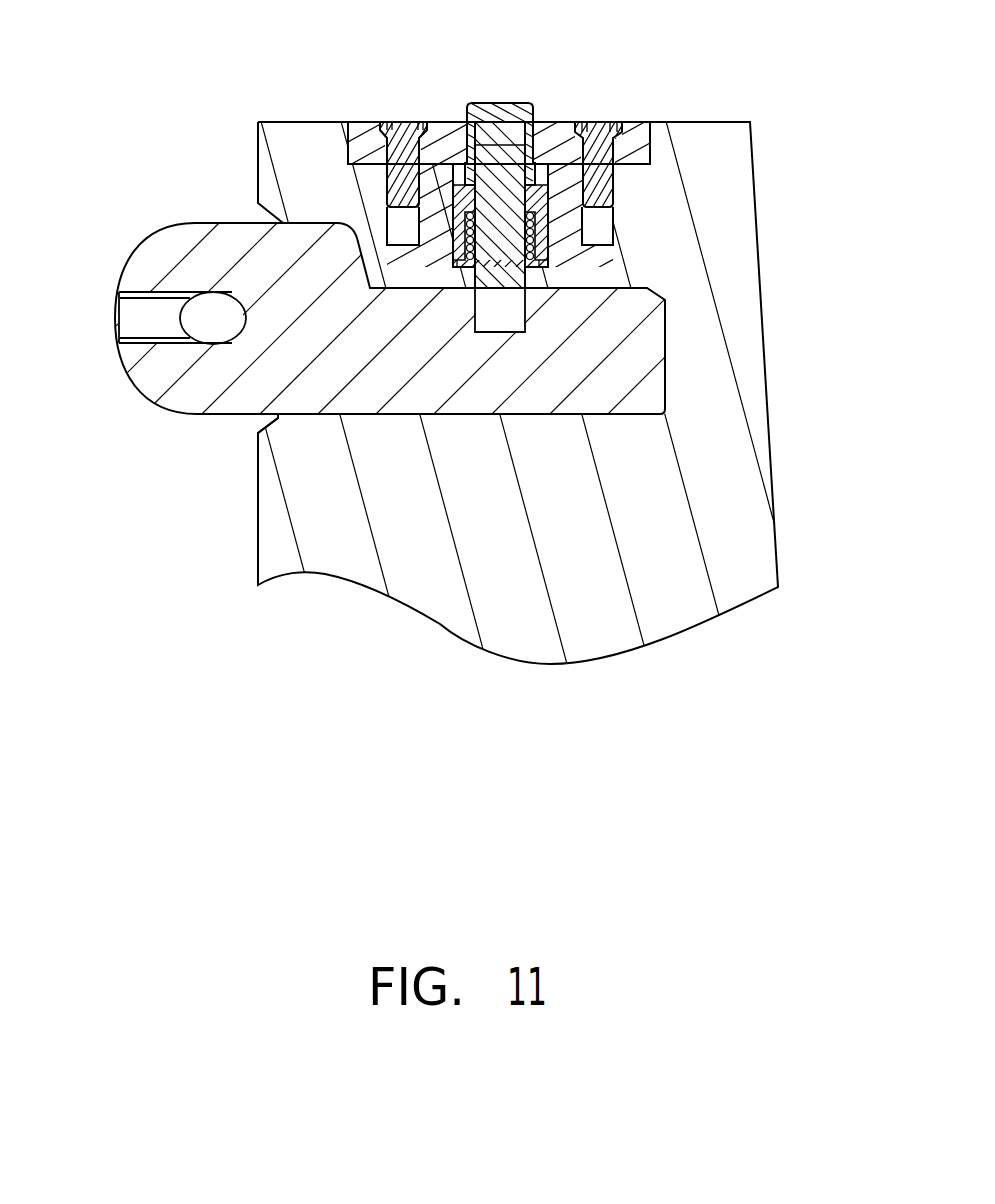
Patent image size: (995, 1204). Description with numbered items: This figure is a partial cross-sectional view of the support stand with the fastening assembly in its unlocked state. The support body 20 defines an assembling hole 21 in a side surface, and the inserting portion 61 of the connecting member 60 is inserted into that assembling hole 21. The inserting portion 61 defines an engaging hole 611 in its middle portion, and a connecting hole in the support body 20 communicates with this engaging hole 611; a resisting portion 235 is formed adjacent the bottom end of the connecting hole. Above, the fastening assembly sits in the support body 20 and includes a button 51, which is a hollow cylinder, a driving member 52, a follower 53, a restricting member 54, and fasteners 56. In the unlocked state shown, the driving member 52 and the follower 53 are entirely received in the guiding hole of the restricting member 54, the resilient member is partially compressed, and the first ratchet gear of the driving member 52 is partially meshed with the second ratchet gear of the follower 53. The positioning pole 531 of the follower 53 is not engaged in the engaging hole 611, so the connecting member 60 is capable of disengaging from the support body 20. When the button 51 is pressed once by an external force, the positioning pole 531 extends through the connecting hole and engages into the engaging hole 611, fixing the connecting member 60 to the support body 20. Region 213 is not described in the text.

The support body 20 is at (708, 147).
The assembling hole 21 is at (267, 425).
The button 51 is at (507, 98).
The driving member 52 is at (493, 130).
The follower 53 is at (543, 202).
The restricting member 54 is at (637, 133).
The fastener 56 is at (402, 127).
The connecting member 60 is at (200, 383).
The inserting portion 61 is at (552, 385).
The receiving cavity 213 is at (543, 245).
The resisting portion 235 is at (532, 278).
The positioning pole 531 is at (502, 278).
The engaging hole 611 is at (500, 332).